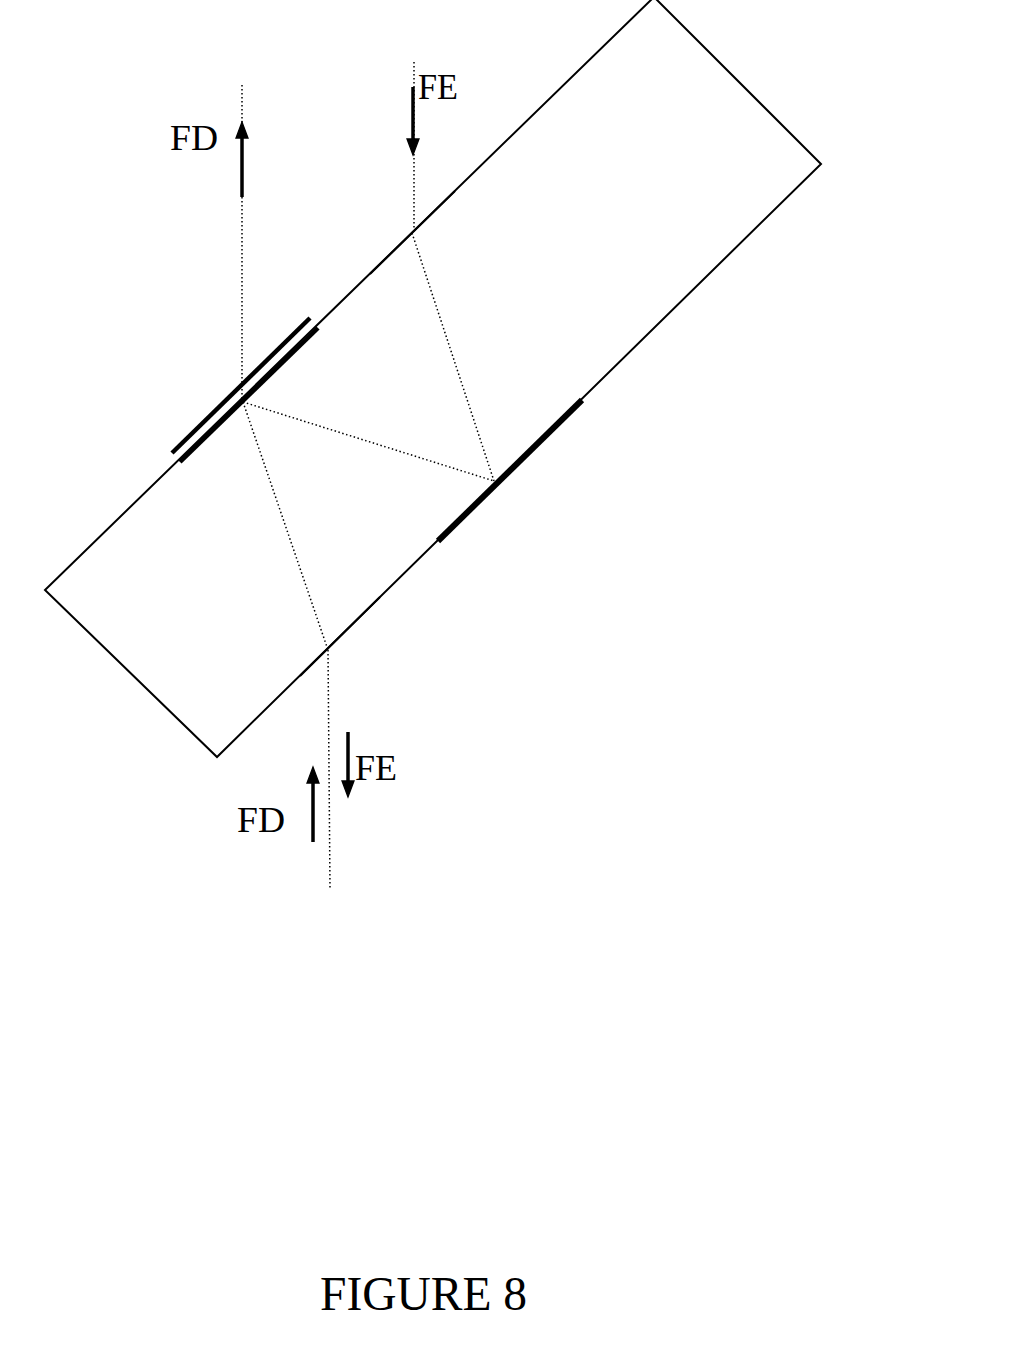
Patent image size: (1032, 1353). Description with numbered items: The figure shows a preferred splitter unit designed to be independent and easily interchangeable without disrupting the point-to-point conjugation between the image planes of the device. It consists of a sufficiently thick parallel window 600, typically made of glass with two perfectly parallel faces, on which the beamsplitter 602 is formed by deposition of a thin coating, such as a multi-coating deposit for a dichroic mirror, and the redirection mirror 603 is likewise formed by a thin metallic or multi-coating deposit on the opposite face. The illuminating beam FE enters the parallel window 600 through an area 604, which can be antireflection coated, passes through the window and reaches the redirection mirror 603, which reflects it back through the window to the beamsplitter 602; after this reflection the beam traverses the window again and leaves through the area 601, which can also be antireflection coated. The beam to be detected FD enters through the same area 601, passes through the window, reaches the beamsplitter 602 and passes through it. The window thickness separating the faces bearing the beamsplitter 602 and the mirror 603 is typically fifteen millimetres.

The parallel window 600 is at (740, 78).
The area 601 is at (355, 630).
The beamsplitter 602 is at (228, 383).
The redirection mirror 603 is at (508, 493).
The area 604 is at (392, 236).